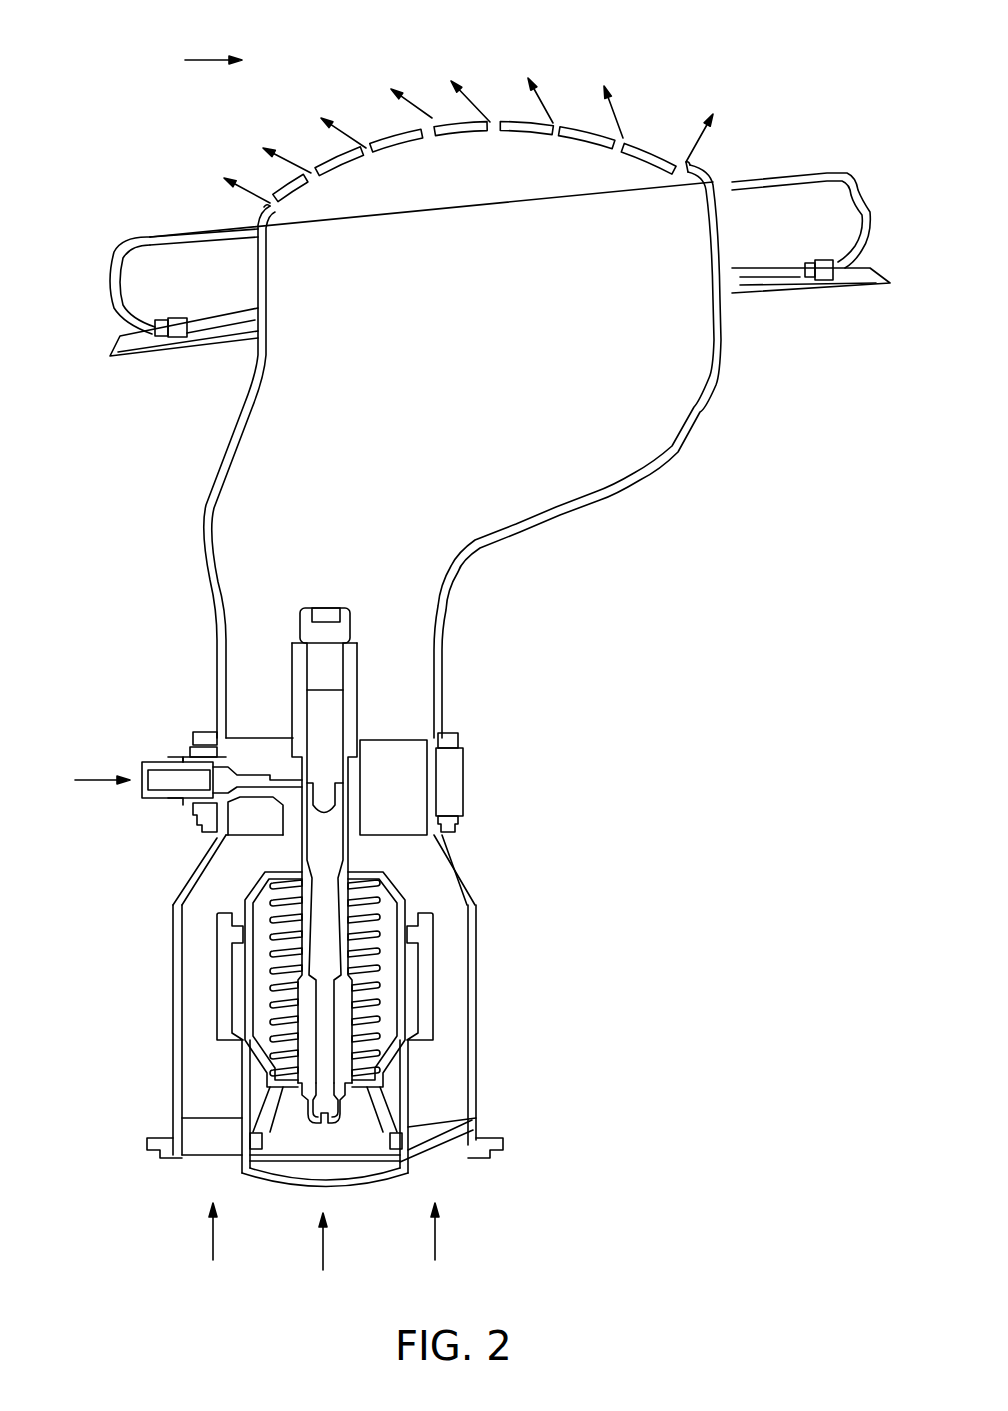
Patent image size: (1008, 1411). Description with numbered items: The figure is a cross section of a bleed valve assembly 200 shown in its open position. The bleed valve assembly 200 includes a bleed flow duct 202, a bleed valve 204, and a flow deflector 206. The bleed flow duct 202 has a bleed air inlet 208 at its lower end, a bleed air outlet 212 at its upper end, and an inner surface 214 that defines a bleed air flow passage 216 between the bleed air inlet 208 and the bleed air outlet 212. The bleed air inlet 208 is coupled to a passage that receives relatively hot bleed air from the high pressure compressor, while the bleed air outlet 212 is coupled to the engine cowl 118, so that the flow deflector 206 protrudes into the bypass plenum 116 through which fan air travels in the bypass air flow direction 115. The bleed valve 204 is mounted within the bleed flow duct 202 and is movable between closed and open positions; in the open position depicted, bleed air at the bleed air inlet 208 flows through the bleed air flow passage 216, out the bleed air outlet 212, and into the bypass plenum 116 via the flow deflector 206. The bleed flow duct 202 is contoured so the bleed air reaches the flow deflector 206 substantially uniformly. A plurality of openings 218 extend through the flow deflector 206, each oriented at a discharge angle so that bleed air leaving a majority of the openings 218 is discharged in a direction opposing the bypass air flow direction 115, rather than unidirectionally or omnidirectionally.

The bypass air flow direction 115 is at (213, 58).
The bypass plenum 116 is at (346, 38).
The engine cowl 118 is at (179, 233).
The bleed valve assembly 200 is at (148, 562).
The bleed flow duct 202 is at (716, 400).
The bleed valve 204 is at (400, 883).
The flow deflector 206 is at (650, 143).
The bleed air inlet 208 is at (203, 1158).
The bleed air outlet 212 is at (493, 206).
The inner surface 214 is at (240, 433).
The bleed air flow passage 216 is at (355, 558).
The openings 218 is at (492, 136).